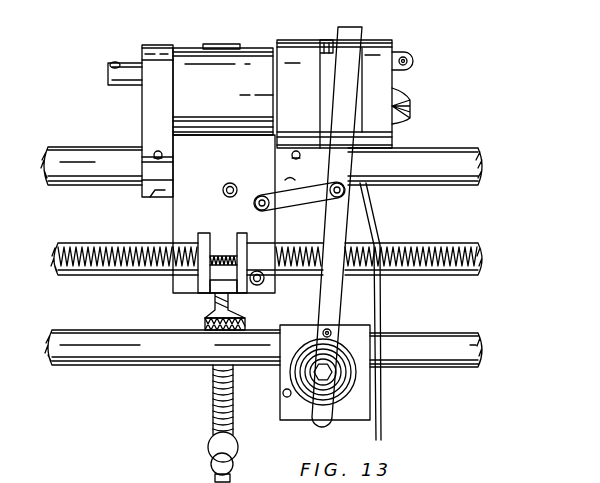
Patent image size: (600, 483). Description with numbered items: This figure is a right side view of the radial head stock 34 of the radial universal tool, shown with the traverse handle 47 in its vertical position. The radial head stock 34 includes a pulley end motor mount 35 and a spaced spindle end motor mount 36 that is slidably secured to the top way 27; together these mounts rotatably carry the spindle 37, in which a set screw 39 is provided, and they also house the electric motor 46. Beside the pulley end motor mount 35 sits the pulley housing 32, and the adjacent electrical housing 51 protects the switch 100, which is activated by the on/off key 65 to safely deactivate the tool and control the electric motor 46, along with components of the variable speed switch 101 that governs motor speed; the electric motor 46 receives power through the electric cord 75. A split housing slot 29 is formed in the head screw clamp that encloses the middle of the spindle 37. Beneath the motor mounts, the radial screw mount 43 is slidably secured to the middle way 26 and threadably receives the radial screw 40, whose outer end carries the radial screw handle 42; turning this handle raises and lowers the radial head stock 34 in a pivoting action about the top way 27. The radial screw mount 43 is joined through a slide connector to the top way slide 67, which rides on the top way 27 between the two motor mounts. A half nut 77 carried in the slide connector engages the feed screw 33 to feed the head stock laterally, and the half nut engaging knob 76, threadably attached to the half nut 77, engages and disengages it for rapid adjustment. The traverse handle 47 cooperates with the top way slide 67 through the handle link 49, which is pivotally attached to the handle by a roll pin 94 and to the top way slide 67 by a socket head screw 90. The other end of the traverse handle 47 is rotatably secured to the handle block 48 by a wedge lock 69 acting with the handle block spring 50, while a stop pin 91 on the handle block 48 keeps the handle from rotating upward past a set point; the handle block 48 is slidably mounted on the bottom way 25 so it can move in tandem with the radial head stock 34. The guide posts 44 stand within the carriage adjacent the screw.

The bottom way 25 is at (100, 352).
The middle way 26 is at (58, 252).
The top way 27 is at (90, 158).
The split housing slot 29 is at (158, 197).
The pulley housing 32 is at (330, 42).
The feed screw 33 is at (426, 250).
The radial head stock 34 is at (194, 41).
The pulley end motor mount 35 is at (312, 82).
The spindle end motor mount 36 is at (155, 100).
The spindle 37 is at (108, 76).
The set screw 39 is at (113, 62).
The radial screw 40 is at (212, 385).
The radial screw handle 42 is at (207, 455).
The radial screw mount 43 is at (178, 280).
The guide posts 44 is at (223, 255).
The electric motor 46 is at (238, 110).
The traverse handle 47 is at (365, 45).
The handle block 48 is at (358, 408).
The handle link 49 is at (284, 207).
The handle block spring 50 is at (352, 352).
The electrical housing 51 is at (390, 124).
The on/off key 65 is at (410, 66).
The top way slide 67 is at (202, 218).
The wedge lock 69 is at (236, 194).
The electric cord 75 is at (379, 312).
The half nut engaging knob 76 is at (207, 322).
The half nut 77 is at (232, 298).
The socket head screw 90 is at (166, 156).
The stop pin 91 is at (296, 392).
The roll pin 94 is at (348, 212).
The switch 100 is at (410, 58).
The variable speed switch 101 is at (410, 110).